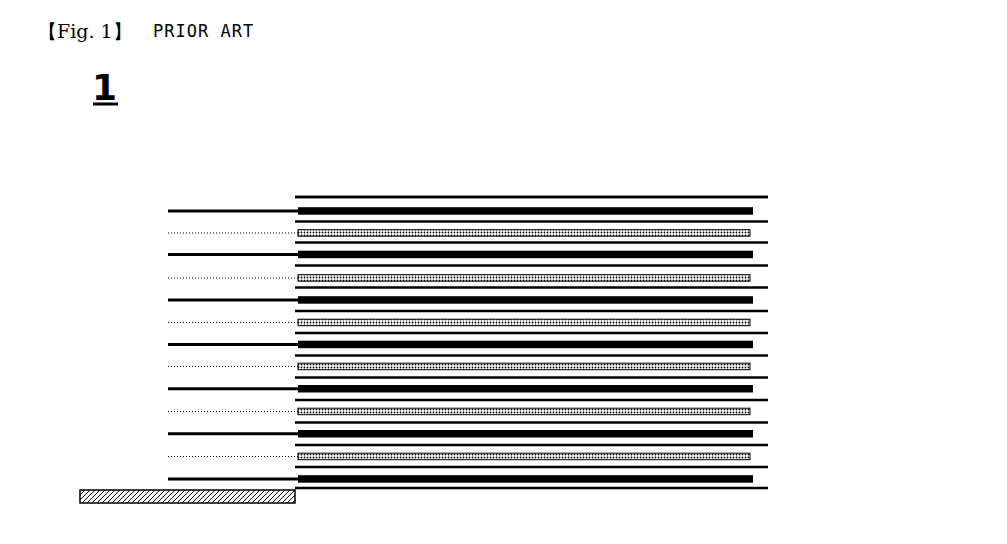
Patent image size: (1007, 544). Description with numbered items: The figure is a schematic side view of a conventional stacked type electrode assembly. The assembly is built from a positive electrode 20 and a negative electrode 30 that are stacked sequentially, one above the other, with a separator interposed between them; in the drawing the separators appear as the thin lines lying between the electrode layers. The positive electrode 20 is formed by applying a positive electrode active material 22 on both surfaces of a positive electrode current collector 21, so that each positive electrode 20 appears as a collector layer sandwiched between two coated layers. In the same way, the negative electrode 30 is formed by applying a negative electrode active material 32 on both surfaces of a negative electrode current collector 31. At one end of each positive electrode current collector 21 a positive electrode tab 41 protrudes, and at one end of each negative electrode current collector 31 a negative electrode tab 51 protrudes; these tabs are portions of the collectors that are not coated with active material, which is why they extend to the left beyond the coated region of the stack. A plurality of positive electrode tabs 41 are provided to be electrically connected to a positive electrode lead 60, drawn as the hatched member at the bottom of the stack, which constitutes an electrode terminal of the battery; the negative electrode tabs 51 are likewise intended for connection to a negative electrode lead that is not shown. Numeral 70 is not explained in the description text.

The positive electrode 20 is at (623, 169).
The positive electrode current collector 21 is at (755, 211).
The positive electrode active material 22 is at (738, 203).
The negative electrode 30 is at (550, 393).
The negative electrode current collector 31 is at (755, 410).
The negative electrode active material 32 is at (584, 435).
The positive electrode tab 41 is at (168, 211).
The negative electrode tab 51 is at (168, 233).
The positive electrode lead 60 is at (132, 490).
The separator 70 is at (770, 243).